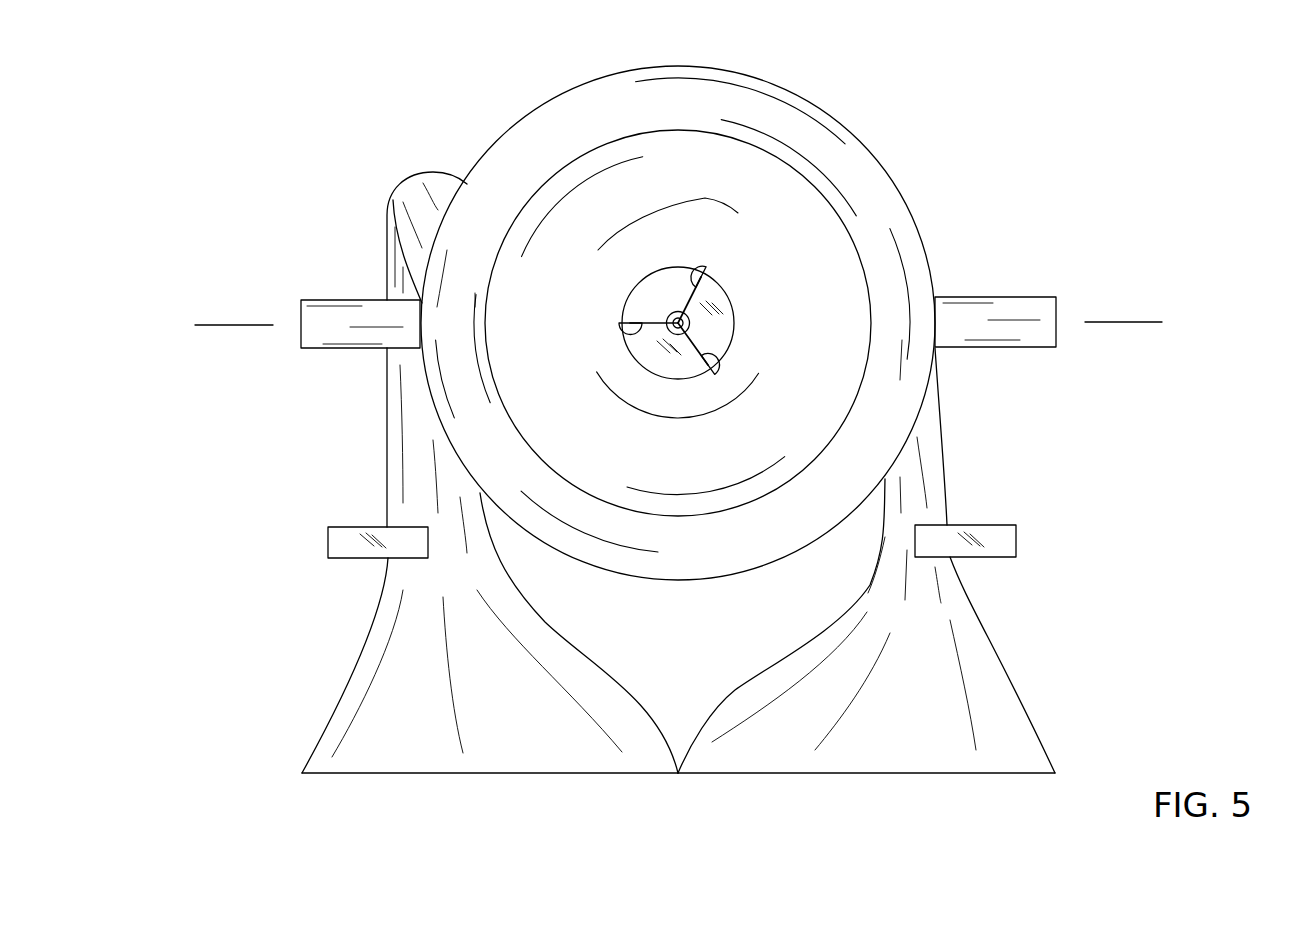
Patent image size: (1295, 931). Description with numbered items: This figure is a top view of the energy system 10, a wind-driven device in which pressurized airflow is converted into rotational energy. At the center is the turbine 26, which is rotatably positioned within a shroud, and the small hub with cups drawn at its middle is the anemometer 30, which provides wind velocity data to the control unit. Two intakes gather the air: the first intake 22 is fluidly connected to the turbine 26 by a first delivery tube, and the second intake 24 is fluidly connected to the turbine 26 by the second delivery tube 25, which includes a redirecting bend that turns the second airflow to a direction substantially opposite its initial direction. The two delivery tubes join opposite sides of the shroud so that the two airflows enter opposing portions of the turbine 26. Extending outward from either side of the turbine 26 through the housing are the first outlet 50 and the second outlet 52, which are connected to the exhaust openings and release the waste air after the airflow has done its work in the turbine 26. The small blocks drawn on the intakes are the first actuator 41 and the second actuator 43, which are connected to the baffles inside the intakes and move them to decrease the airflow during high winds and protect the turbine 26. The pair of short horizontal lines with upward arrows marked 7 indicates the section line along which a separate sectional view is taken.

The energy system 10 is at (255, 132).
The first intake 22 is at (892, 773).
The second intake 24 is at (410, 773).
The second delivery tube 25 is at (387, 262).
The turbine 26 is at (882, 193).
The anemometer 30 is at (676, 284).
The first actuator 41 is at (1016, 540).
The second actuator 43 is at (328, 540).
The first outlet 50 is at (301, 312).
The second outlet 52 is at (1056, 306).
The section line 7- 7 is at (235, 327).